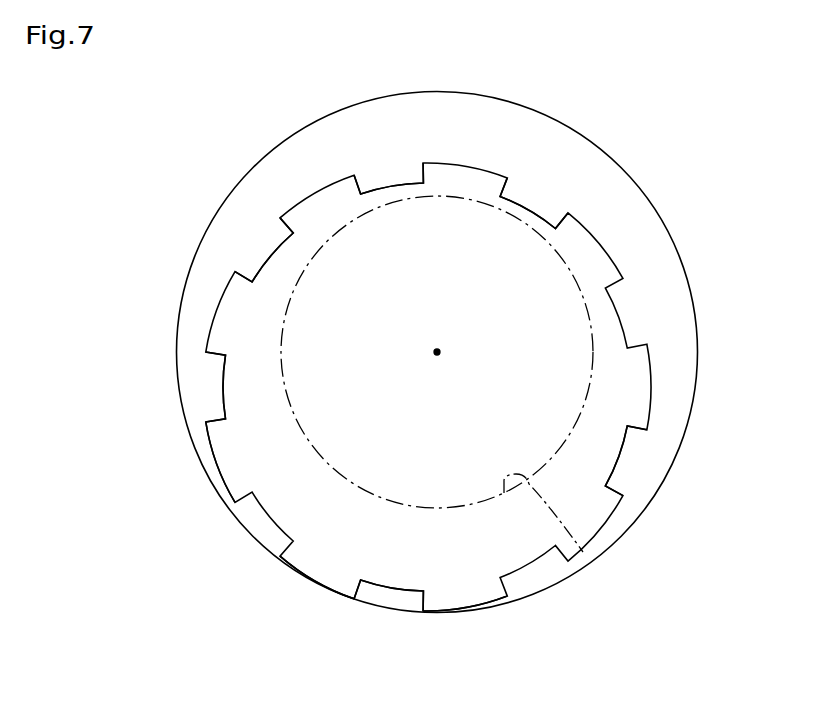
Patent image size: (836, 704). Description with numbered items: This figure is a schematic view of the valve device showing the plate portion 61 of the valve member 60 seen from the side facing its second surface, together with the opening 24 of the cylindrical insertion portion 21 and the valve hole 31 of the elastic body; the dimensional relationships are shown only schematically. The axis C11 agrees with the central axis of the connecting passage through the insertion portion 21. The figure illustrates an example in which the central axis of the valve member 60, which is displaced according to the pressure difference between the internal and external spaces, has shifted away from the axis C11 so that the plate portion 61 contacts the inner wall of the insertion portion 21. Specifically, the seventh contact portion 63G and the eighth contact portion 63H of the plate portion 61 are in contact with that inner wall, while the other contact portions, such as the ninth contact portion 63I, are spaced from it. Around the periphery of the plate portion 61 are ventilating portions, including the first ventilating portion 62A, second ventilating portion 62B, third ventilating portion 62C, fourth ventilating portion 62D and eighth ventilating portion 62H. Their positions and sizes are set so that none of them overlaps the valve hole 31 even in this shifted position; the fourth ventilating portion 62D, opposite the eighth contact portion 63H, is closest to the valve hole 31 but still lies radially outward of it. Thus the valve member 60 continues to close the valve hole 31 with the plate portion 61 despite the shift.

The insertion portion 21 is at (469, 352).
The opening 24 is at (667, 268).
The valve hole 31 is at (583, 544).
The valve member 60 is at (668, 356).
The plate portion 61 is at (607, 392).
The first ventilating portion 62A is at (223, 383).
The second ventilating portion 62B is at (270, 248).
The third ventilating portion 62C is at (390, 181).
The fourth ventilating portion 62D is at (528, 199).
The eighth ventilating portion 62H is at (383, 591).
The seventh contact portion 63G is at (455, 599).
The eighth contact portion 63H is at (313, 569).
The ninth contact portion 63I is at (226, 456).
The axis C11 is at (437, 349).